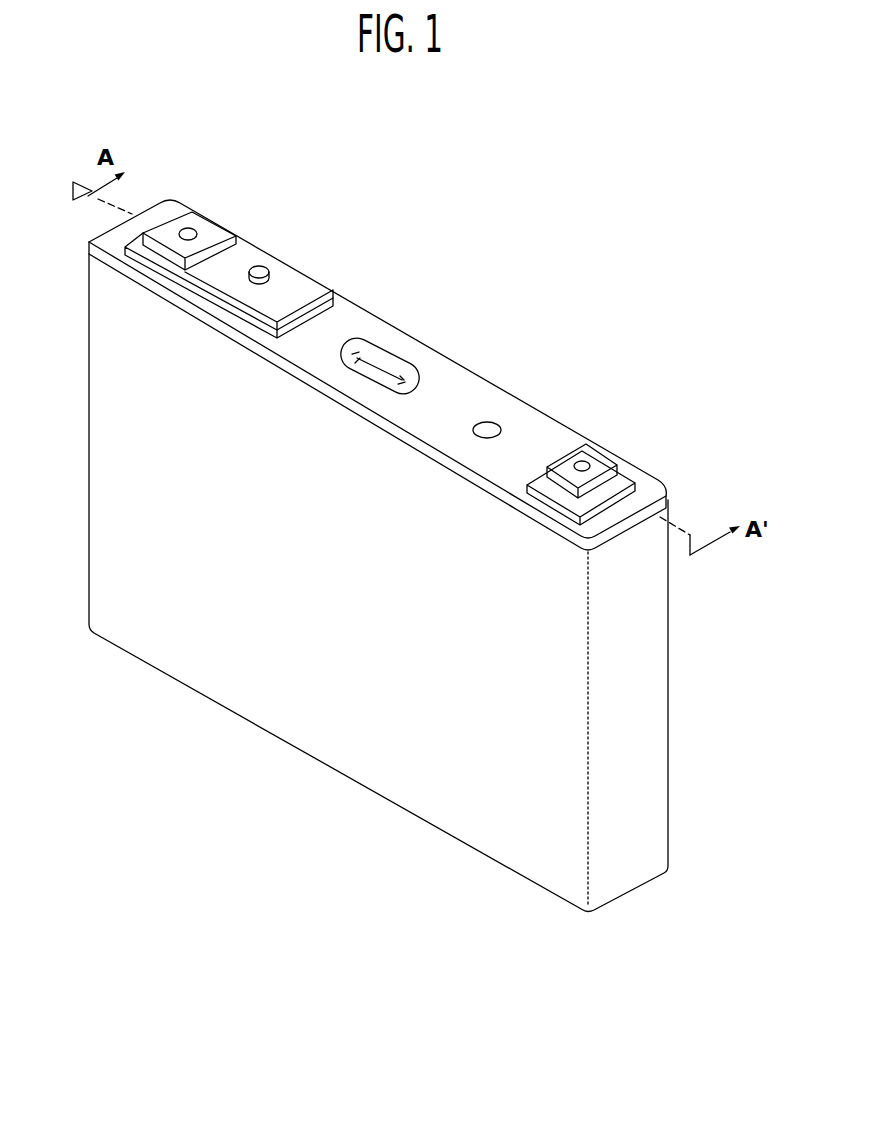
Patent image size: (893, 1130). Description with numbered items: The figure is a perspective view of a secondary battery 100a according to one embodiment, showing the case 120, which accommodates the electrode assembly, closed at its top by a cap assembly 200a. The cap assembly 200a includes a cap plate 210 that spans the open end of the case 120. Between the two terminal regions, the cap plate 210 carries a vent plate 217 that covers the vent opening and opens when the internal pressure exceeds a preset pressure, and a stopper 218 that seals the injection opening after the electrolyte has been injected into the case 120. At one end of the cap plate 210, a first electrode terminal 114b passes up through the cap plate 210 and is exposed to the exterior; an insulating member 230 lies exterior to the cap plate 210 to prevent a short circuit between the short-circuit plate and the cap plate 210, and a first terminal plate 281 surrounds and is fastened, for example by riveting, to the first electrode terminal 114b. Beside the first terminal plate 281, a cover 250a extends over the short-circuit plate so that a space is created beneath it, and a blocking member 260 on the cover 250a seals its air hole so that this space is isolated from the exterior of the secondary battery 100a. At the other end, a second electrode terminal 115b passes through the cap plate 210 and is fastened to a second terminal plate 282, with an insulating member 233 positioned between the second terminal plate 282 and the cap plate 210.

The secondary battery 100a is at (718, 203).
The case 120 is at (278, 722).
The cap assembly 200a is at (357, 347).
The cap plate 210 is at (353, 333).
The vent plate 217 is at (393, 357).
The stopper 218 is at (488, 423).
The insulating member 230 is at (160, 267).
The insulating member 233 is at (622, 476).
The first terminal plate 281 is at (216, 232).
The second terminal plate 282 is at (597, 456).
The first electrode terminal 114b is at (190, 228).
The second electrode terminal 115b is at (581, 459).
The cover 250a is at (255, 255).
The blocking member 260 is at (268, 268).